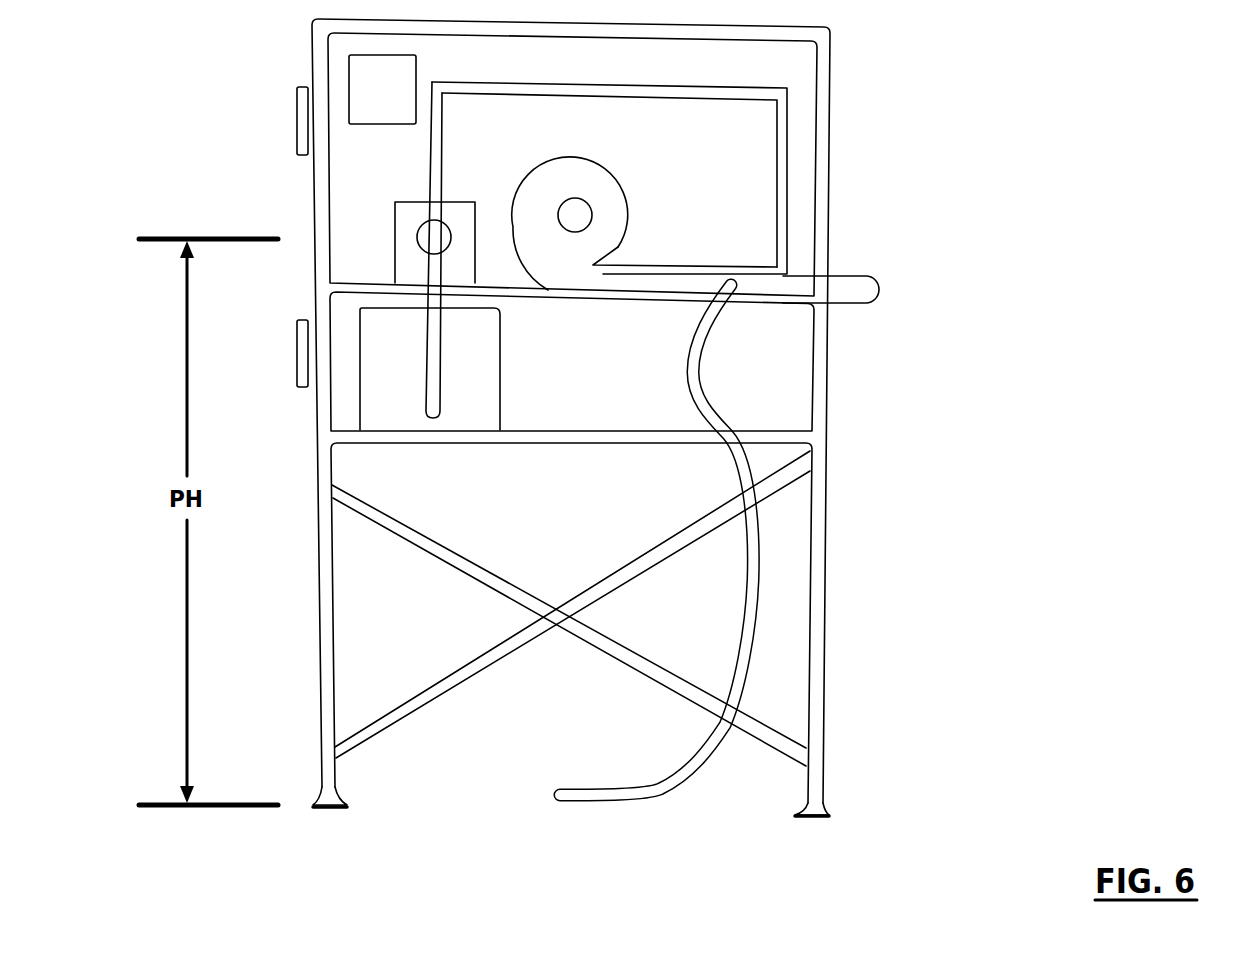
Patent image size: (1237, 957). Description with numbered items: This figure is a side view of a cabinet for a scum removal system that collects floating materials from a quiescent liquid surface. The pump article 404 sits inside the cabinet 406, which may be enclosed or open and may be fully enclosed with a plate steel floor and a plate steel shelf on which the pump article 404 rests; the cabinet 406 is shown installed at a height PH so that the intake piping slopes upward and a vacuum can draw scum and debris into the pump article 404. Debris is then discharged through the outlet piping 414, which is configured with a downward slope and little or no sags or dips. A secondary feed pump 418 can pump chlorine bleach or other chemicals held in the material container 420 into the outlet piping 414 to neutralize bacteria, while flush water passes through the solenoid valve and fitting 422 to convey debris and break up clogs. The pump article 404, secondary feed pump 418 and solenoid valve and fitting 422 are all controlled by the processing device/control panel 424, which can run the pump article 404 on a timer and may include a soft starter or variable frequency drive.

The pump article 404 is at (609, 186).
The cabinet 406 is at (587, 417).
The outlet piping 414 is at (839, 251).
The secondary feed pump 418 is at (392, 240).
The material container 420 is at (409, 376).
The solenoid valve and fitting 422 is at (667, 540).
The processing device/control panel 424 is at (399, 99).